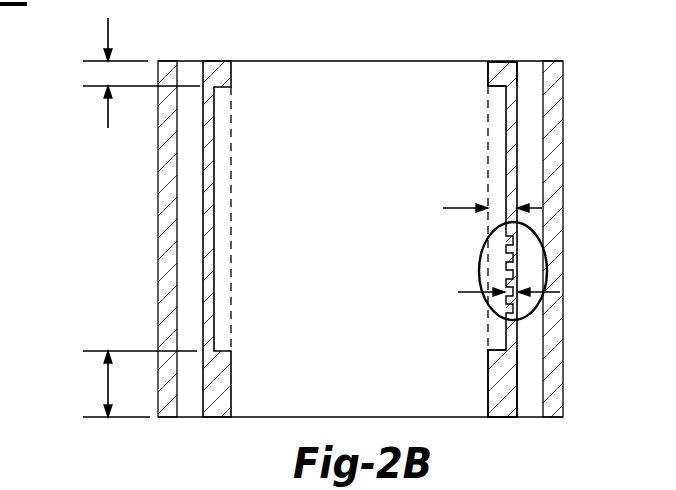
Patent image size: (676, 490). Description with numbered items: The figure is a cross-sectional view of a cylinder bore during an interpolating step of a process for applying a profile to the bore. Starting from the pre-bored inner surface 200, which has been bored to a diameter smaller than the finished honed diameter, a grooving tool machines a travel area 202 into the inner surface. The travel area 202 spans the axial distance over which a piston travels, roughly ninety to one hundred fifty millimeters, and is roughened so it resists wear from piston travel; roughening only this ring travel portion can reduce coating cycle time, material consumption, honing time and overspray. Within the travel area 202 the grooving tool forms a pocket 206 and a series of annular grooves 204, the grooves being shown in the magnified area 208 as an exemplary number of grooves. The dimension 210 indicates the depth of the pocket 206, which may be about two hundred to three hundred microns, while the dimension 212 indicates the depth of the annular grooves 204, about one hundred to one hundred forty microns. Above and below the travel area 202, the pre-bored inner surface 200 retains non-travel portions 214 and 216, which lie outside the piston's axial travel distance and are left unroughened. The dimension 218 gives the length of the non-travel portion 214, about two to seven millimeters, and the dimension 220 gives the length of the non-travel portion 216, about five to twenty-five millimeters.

The pre-bored inner surface 200 is at (231, 155).
The travel area 202 is at (505, 138).
The annular grooves 204 is at (510, 322).
The pocket 206 is at (218, 333).
The magnified area 208 is at (548, 268).
The pocket depth dimension 210 is at (464, 208).
The groove depth dimension 212 is at (470, 293).
The non-travel portion 214 is at (488, 73).
The non-travel portion 216 is at (489, 397).
The non-travel portion length dimension 218 is at (107, 34).
The non-travel portion length dimension 220 is at (107, 384).